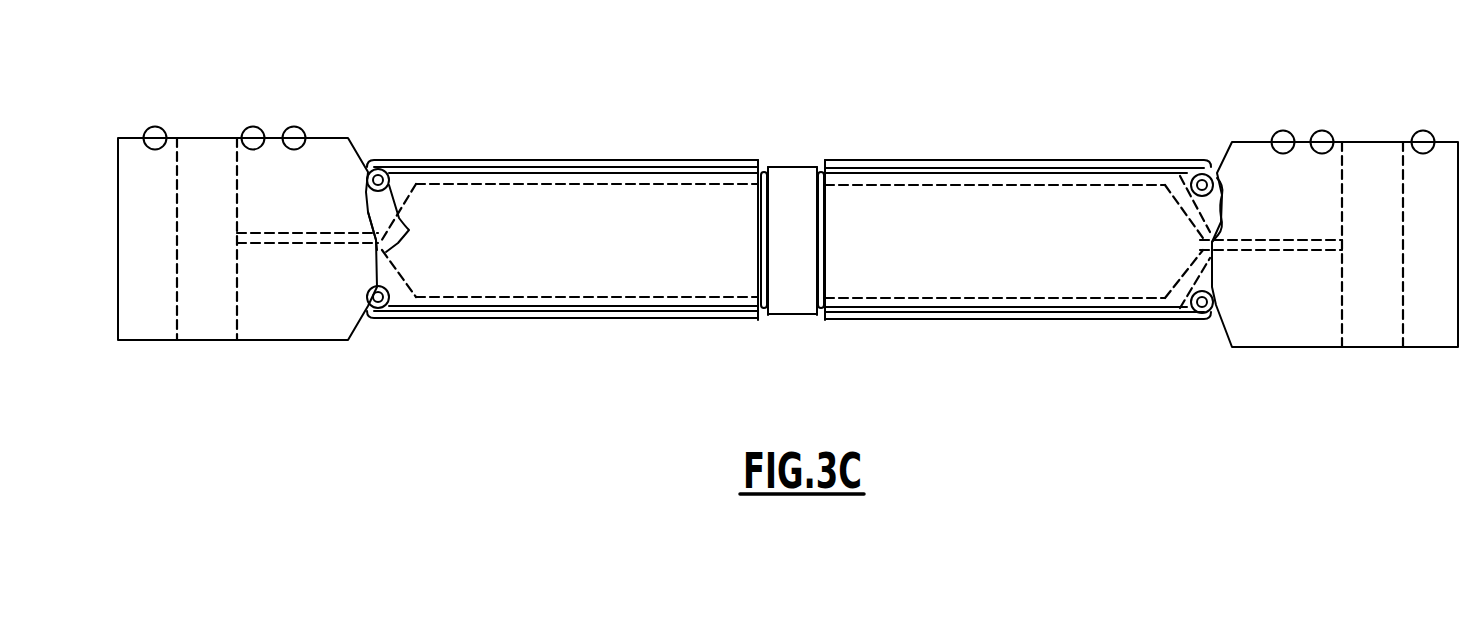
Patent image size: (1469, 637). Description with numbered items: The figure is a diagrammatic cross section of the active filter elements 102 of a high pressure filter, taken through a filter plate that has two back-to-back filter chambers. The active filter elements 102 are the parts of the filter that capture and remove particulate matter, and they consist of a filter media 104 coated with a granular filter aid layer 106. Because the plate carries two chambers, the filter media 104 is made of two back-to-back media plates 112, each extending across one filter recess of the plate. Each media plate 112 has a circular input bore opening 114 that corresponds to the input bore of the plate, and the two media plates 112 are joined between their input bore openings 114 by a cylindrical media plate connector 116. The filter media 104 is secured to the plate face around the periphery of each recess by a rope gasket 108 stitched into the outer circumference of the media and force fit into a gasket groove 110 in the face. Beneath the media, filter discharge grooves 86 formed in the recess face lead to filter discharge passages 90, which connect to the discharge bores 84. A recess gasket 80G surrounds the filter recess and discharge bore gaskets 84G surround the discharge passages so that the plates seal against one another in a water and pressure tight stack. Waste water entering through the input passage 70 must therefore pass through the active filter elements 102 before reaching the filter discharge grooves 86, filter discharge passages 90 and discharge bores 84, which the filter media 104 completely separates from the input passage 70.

The input passage 70 is at (793, 110).
The discharge bore 84 is at (225, 248).
The discharge bore gasket 84G is at (248, 126).
The recess gasket 80G is at (303, 126).
The filter discharge groove 86 is at (663, 186).
The filter discharge passage 90 is at (288, 246).
The active filter elements 102 is at (689, 135).
The filter media 104 is at (836, 354).
The granular filter aid layer 106 is at (540, 158).
The rope gasket 108 is at (404, 229).
The gasket groove 110 is at (367, 240).
The media plate 112 is at (582, 186).
The input bore opening 114 is at (808, 140).
The media plate connector 116 is at (756, 268).